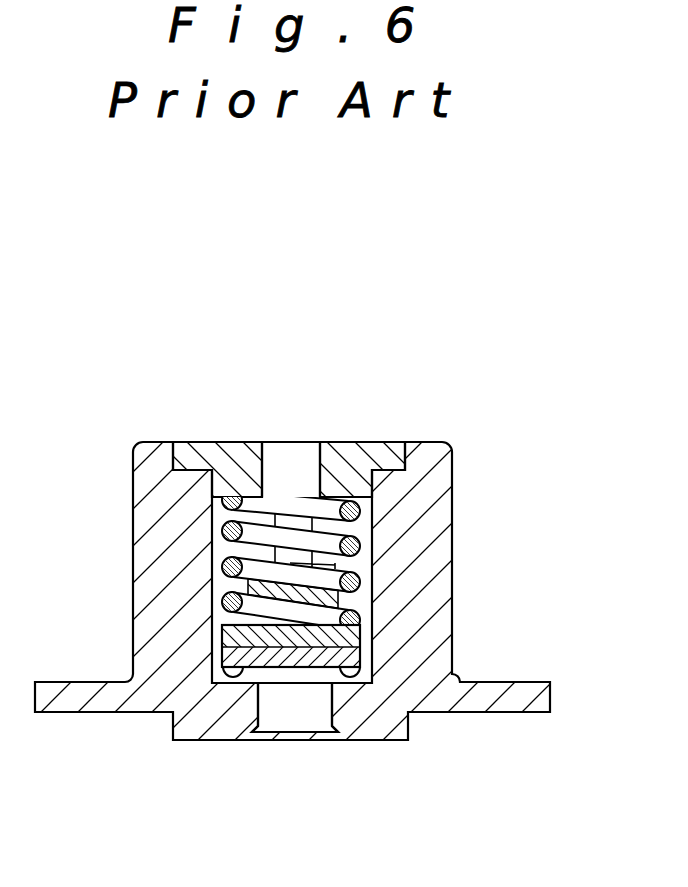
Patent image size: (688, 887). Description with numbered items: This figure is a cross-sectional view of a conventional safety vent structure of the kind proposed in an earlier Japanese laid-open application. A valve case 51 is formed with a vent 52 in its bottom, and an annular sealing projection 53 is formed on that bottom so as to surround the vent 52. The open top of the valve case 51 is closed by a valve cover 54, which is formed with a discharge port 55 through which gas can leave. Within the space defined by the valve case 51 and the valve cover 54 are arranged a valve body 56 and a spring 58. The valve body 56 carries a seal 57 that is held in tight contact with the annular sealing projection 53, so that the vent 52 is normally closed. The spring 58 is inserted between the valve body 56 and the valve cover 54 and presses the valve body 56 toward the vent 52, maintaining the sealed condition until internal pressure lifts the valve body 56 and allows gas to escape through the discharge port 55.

The valve case 51 is at (146, 612).
The vent 52 is at (303, 712).
The annular sealing projection 53 is at (233, 677).
The valve cover 54 is at (226, 450).
The discharge port 55 is at (266, 468).
The valve body 56 is at (362, 628).
The seal 57 is at (358, 663).
The spring 58 is at (362, 548).